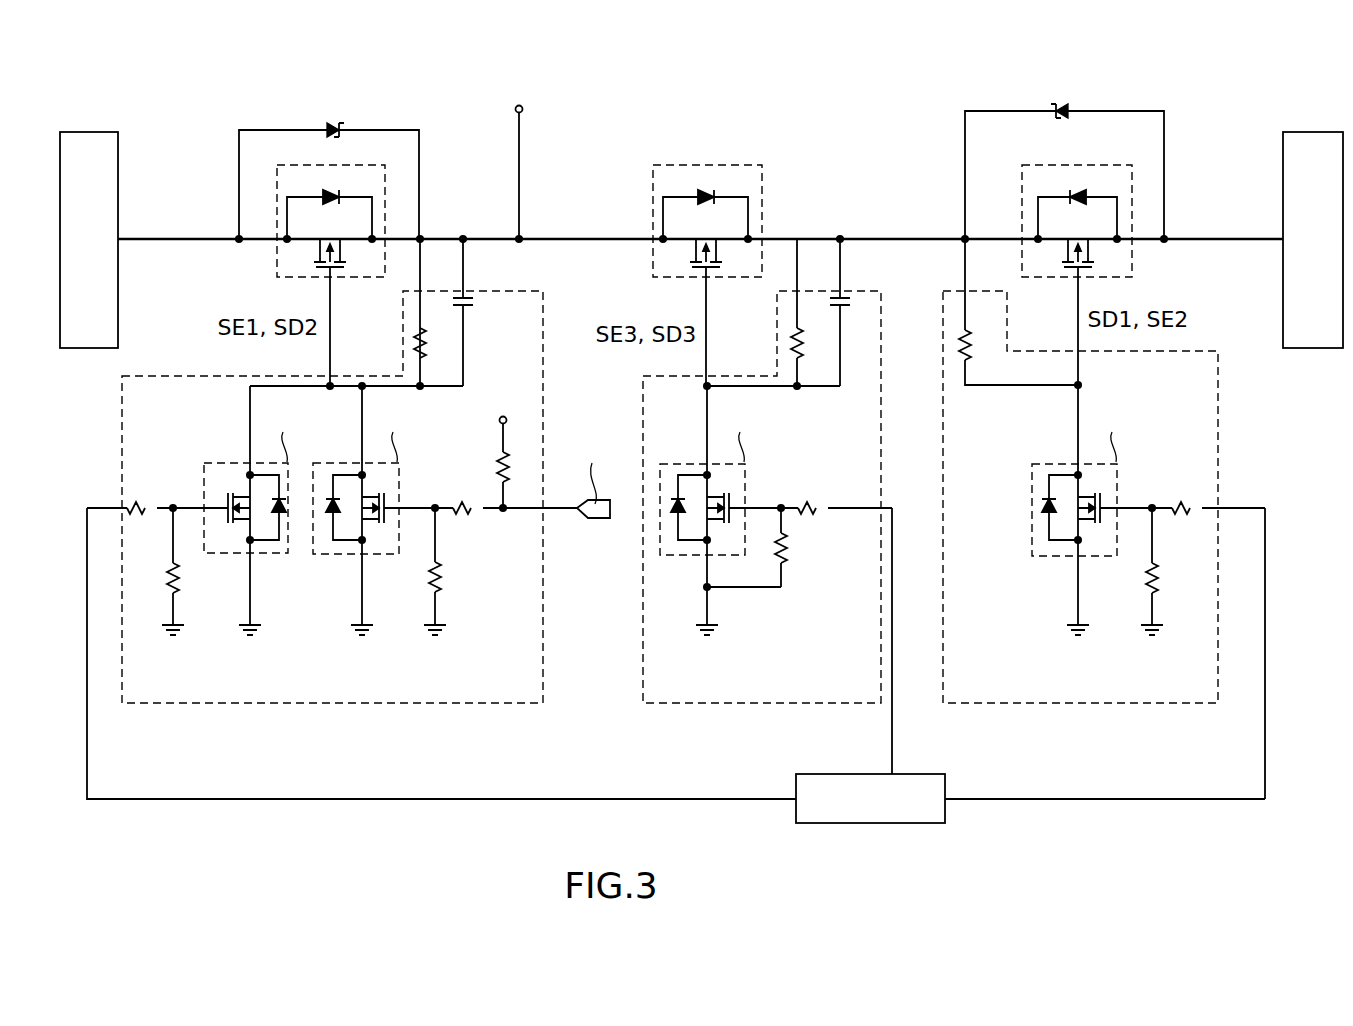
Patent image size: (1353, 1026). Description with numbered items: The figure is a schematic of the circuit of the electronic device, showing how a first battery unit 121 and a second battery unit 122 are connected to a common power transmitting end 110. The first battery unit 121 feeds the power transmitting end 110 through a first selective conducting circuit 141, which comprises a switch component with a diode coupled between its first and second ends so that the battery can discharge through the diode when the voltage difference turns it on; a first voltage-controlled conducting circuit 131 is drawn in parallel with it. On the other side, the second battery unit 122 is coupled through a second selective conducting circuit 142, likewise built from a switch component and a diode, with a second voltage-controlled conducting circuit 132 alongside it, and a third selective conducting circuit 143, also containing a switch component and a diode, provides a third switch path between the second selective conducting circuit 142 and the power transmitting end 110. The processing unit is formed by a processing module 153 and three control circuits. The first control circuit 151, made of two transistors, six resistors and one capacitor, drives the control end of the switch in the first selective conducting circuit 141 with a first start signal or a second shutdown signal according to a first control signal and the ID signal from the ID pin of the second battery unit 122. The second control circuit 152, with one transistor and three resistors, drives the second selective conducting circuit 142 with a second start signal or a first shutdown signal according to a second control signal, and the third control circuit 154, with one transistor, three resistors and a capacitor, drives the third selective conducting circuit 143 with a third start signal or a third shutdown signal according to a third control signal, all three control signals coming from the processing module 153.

The power transmitting end 110 is at (519, 105).
The first battery unit 121 is at (97, 132).
The second battery unit 122 is at (1318, 132).
The first voltage-controlled conducting circuit 131 is at (335, 124).
The second voltage-controlled conducting circuit 132 is at (1062, 104).
The first selective conducting circuit 141 is at (277, 259).
The second selective conducting circuit 142 is at (1132, 258).
The third selective conducting circuit 143 is at (653, 257).
The first control circuit 151 is at (171, 703).
The second control circuit 152 is at (1177, 703).
The processing module 153 is at (945, 815).
The third control circuit 154 is at (675, 703).